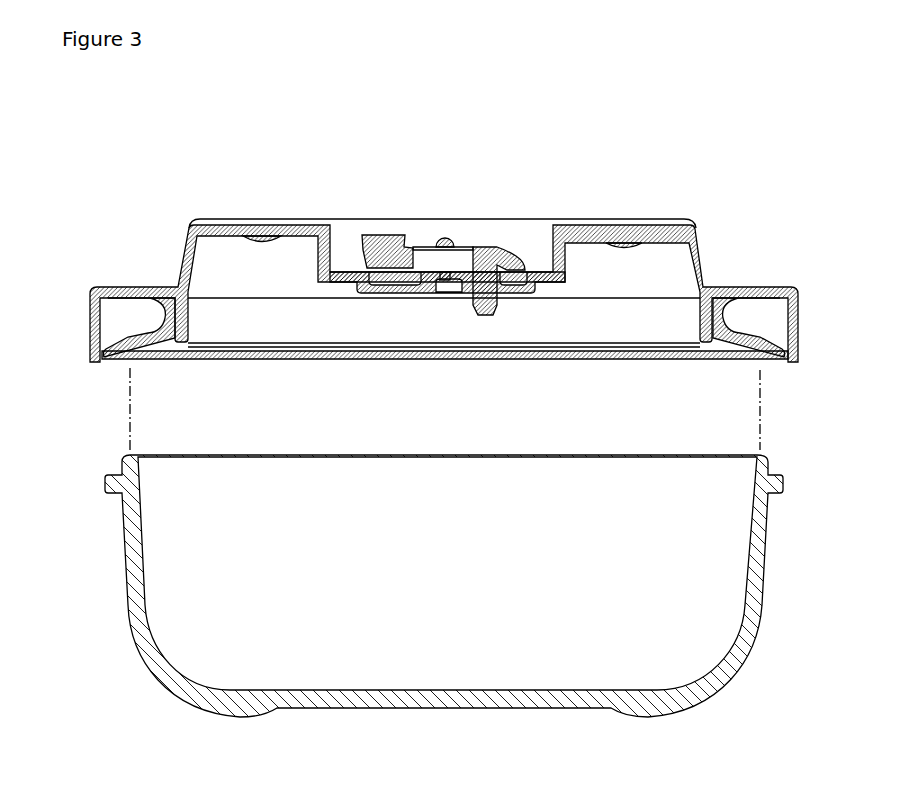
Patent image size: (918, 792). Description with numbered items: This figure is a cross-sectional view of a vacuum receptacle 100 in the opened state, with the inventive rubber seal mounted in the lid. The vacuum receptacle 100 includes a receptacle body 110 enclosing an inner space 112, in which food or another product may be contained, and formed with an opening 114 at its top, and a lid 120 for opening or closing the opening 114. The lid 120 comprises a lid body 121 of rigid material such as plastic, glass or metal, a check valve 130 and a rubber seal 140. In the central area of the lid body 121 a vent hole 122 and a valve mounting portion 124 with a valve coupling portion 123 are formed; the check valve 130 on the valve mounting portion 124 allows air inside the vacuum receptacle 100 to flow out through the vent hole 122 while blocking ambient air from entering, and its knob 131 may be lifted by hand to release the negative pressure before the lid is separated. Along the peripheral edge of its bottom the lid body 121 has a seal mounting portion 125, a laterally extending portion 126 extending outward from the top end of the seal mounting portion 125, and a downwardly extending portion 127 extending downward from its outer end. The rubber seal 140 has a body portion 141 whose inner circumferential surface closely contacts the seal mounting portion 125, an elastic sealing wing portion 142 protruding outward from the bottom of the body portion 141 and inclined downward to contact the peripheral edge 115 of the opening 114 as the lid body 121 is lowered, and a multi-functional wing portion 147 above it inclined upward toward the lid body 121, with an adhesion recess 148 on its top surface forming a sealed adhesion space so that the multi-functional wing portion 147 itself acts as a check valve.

The vacuum receptacle 100 is at (113, 168).
The receptacle body 110 is at (745, 678).
The inner space 112 is at (700, 608).
The opening 114 is at (752, 548).
The peripheral edge 115 is at (760, 522).
The lid 120 is at (705, 223).
The lid body 121 is at (630, 223).
The vent hole 122 is at (446, 282).
The valve coupling portion 123 is at (500, 290).
The valve mounting portion 124 is at (398, 285).
The seal mounting portion 125 is at (700, 322).
The laterally extending portion 126 is at (760, 290).
The downwardly extending portion 127 is at (800, 340).
The check valve 130 is at (458, 240).
The knob 131 is at (372, 234).
The rubber seal 140 is at (730, 298).
The body portion 141 is at (160, 298).
The elastic sealing wing portion 142 is at (158, 343).
The multi-functional wing portion 147 is at (118, 308).
The adhesion recess 148 is at (138, 306).